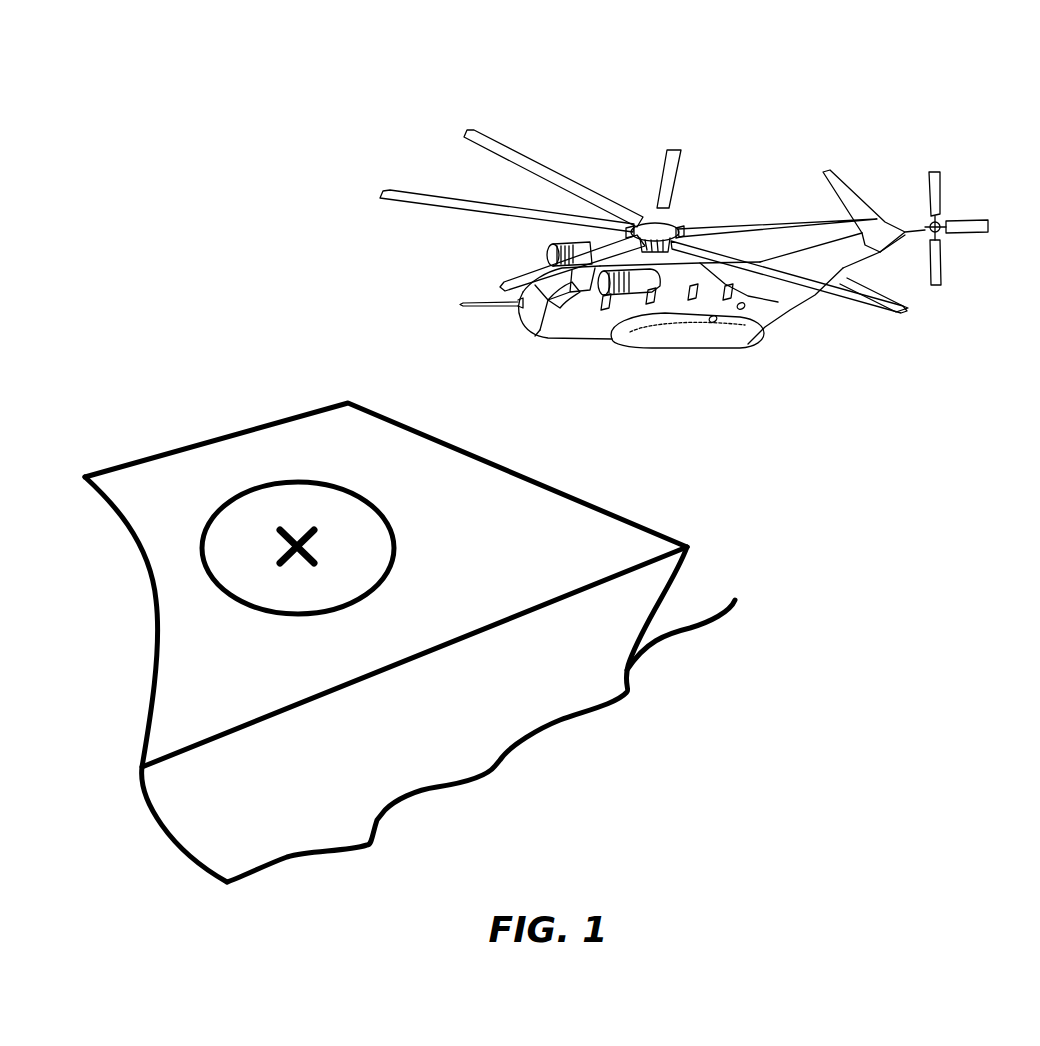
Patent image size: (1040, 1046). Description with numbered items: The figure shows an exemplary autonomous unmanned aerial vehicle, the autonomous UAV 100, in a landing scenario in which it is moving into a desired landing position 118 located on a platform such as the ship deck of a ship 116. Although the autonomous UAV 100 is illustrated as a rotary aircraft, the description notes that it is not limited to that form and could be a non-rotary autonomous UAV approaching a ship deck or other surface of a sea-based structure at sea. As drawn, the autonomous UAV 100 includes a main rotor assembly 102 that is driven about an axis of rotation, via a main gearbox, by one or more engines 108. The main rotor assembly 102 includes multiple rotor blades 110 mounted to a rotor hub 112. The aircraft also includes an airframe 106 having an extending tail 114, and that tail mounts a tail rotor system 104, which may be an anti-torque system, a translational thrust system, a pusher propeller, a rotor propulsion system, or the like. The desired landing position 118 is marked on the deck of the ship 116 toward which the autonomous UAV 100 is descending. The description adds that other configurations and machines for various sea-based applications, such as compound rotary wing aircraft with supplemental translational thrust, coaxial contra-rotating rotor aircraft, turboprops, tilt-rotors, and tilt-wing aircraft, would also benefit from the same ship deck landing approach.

The autonomous UAV 100 is at (922, 124).
The main rotor assembly 102 is at (632, 190).
The tail rotor system 104 is at (966, 252).
The airframe 106 is at (760, 307).
The engine 108 is at (637, 277).
The rotor blade 110 is at (495, 150).
The rotor hub 112 is at (663, 225).
The extending tail 114 is at (873, 268).
The ship 116 is at (642, 516).
The desired landing position 118 is at (293, 505).